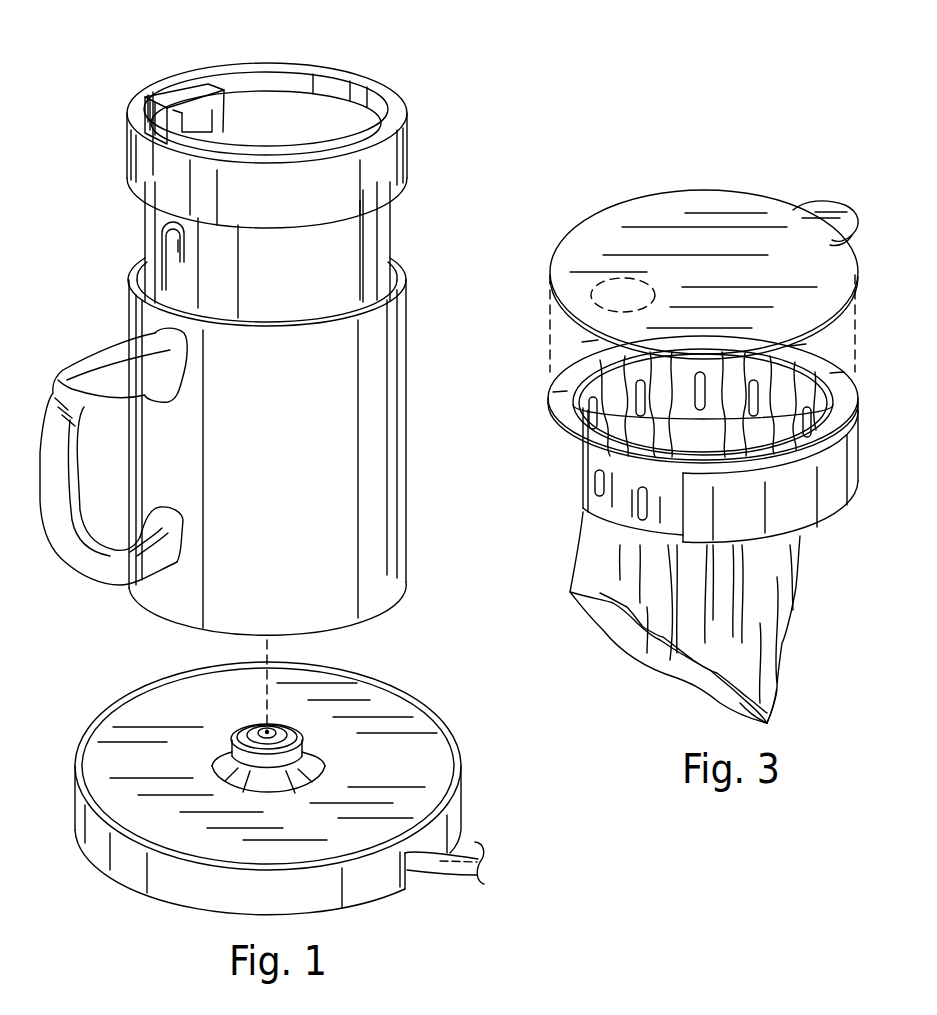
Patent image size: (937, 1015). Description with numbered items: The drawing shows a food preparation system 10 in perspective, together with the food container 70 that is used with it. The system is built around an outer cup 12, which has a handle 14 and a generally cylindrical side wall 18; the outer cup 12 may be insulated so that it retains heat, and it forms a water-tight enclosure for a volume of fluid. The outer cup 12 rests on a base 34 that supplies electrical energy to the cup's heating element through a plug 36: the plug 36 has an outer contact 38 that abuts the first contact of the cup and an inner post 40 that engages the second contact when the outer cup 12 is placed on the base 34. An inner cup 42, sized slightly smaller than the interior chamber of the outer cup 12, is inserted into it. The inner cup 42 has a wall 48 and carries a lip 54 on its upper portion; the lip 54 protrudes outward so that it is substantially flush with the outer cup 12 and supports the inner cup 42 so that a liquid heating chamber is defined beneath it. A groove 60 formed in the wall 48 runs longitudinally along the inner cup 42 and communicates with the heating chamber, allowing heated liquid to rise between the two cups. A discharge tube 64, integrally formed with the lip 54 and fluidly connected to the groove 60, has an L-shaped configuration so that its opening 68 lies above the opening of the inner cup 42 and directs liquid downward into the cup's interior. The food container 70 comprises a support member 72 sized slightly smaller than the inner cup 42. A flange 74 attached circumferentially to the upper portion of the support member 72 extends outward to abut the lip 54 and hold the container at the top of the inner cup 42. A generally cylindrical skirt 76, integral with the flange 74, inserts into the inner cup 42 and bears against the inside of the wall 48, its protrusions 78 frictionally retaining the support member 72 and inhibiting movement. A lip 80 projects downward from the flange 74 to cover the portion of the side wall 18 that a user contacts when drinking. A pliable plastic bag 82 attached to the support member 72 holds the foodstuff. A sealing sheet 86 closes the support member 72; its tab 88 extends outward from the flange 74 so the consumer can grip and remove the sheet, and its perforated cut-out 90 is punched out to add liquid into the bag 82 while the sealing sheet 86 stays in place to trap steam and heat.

In FIG. 1, the food preparation system 10 is at (91, 325).
In FIG. 1, the outer cup 12 is at (407, 455).
In FIG. 1, the handle 14 is at (42, 522).
In FIG. 1, the side wall 18 is at (375, 553).
In FIG. 1, the base 34 is at (463, 805).
In FIG. 1, the plug 36 is at (326, 744).
In FIG. 1, the outer contact 38 is at (236, 730).
In FIG. 1, the inner post 40 is at (283, 727).
In FIG. 1, the inner cup 42 is at (399, 228).
In FIG. 1, the wall 48 is at (373, 267).
In FIG. 1, the lip 54 is at (430, 213).
In FIG. 1, the groove 60 is at (168, 257).
In FIG. 1, the discharge tube 64 is at (177, 83).
In FIG. 1, the opening 68 is at (222, 130).
In FIG. 3, the food container 70 is at (870, 405).
In FIG. 3, the support member 72 is at (570, 468).
In FIG. 3, the flange 74 is at (568, 420).
In FIG. 3, the skirt 76 is at (605, 494).
In FIG. 3, the protrusions 78 is at (620, 508).
In FIG. 3, the lip 80 is at (795, 500).
In FIG. 3, the bag 82 is at (783, 683).
In FIG. 3, the sealing sheet 86 is at (754, 193).
In FIG. 3, the tab 88 is at (858, 228).
In FIG. 3, the perforated cut-out 90 is at (607, 276).